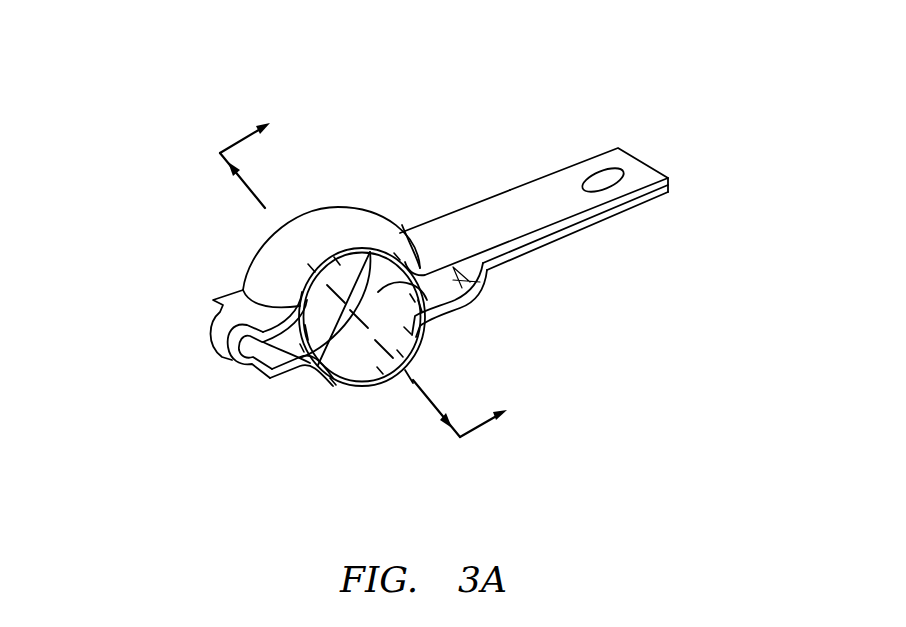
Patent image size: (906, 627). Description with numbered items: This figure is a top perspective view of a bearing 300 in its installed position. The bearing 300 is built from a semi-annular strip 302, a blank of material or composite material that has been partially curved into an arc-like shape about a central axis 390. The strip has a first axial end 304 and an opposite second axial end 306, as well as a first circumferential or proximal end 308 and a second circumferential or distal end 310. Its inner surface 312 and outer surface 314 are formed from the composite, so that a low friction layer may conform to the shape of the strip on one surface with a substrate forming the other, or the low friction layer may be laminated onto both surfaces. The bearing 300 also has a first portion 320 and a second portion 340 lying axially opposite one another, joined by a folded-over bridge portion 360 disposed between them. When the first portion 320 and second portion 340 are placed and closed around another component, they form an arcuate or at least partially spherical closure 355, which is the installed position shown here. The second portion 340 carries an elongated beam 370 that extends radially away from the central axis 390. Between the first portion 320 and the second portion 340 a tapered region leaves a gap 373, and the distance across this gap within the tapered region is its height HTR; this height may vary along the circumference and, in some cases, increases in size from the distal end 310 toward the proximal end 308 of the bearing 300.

The bearing 300 is at (142, 120).
The semi-annular strip 302 is at (505, 187).
The first axial end 304 is at (217, 302).
The second axial end 306 is at (267, 372).
The first circumferential end 308 is at (217, 343).
The second circumferential end 310 is at (670, 182).
The inner surface 312 is at (345, 371).
The outer surface 314 is at (272, 262).
The first portion 320 is at (410, 232).
The second portion 340 is at (424, 340).
The arcuate or at least partially spherical closure 355 is at (410, 375).
The folded-over bridge portion 360 is at (542, 188).
The elongated beam 370 is at (607, 213).
The gap 373 is at (440, 297).
The height of the gap HTR is at (485, 290).
The central axis 390 is at (257, 190).